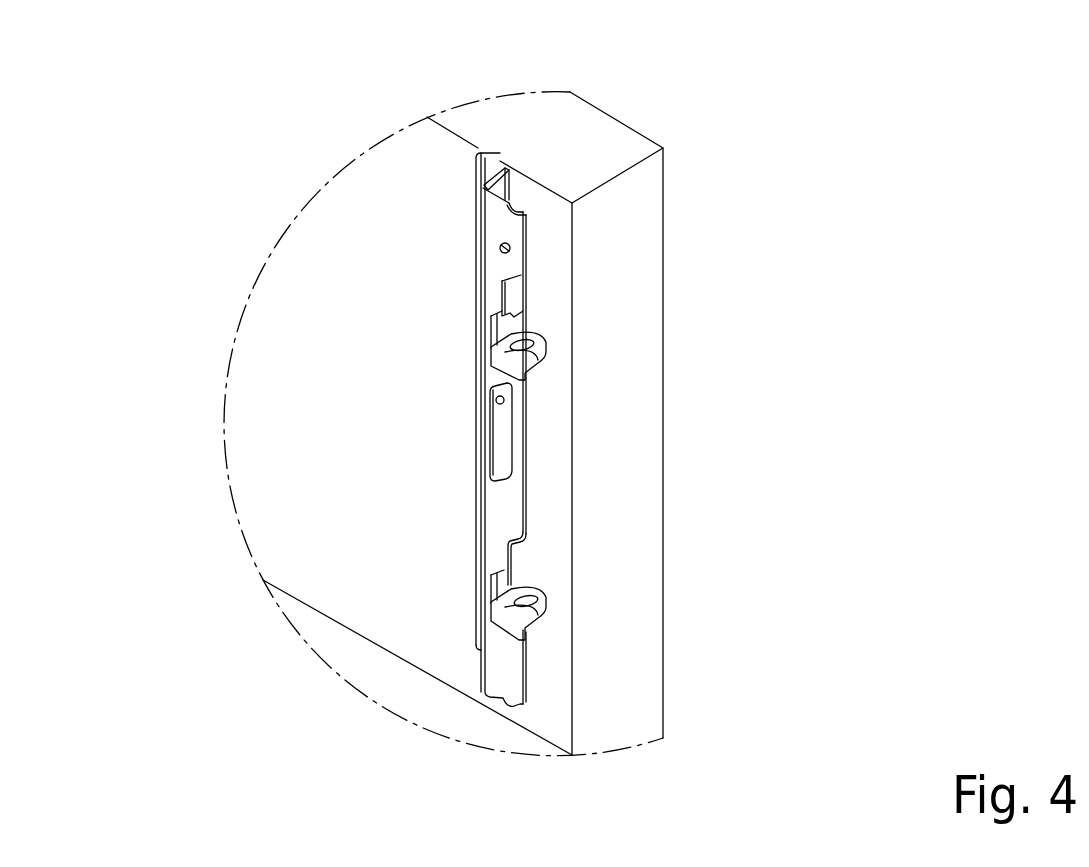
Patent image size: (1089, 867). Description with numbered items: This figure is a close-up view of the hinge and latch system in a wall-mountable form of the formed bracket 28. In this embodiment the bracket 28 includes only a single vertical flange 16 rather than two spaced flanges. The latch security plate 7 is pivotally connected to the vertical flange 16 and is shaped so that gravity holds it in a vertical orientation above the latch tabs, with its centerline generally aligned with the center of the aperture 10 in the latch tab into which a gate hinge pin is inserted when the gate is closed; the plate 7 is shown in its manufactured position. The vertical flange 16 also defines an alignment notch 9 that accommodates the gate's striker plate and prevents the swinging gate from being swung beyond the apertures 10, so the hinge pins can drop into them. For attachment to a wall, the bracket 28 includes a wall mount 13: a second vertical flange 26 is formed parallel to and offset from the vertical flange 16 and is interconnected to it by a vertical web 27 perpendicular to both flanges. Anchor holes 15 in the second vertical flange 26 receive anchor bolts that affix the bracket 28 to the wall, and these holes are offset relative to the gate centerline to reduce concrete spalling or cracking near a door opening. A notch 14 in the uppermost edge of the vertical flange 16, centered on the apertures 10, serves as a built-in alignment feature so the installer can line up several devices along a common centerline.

The latch security plate 7 is at (540, 307).
The alignment notch 9 is at (520, 551).
The aperture 10 is at (540, 349).
The wall mount 13 is at (464, 376).
The notch 14 is at (518, 191).
The anchor holes 15 is at (465, 236).
The vertical flange 16 is at (522, 658).
The second vertical flange 26 is at (488, 146).
The vertical web 27 is at (495, 157).
The formed bracket 28 is at (537, 238).